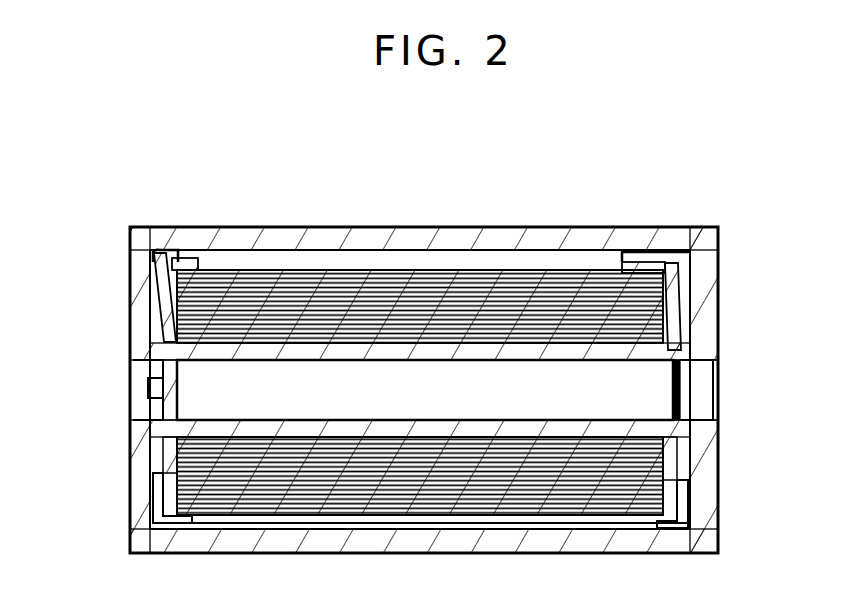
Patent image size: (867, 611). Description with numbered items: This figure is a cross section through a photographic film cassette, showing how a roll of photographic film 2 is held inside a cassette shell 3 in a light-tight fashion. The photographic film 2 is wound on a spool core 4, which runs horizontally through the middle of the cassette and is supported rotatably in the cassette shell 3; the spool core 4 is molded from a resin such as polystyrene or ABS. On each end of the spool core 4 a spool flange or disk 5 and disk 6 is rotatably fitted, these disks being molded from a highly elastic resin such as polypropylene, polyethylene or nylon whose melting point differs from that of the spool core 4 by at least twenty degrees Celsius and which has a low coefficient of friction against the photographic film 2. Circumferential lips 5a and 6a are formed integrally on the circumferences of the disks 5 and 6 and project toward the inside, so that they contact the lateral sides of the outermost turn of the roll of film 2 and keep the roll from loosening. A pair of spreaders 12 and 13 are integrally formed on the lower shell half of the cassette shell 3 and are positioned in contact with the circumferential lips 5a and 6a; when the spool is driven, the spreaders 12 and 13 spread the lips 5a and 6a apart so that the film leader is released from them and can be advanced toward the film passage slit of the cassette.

The photographic film 2 is at (428, 505).
The cassette shell 3 is at (421, 228).
The spool core 4 is at (674, 396).
The spool flange or disk 5 is at (150, 318).
The circumferential lip 5a is at (160, 250).
The spool flange or disk 6 is at (677, 320).
The circumferential lip 6a is at (684, 250).
The spreader 12 is at (186, 258).
The spreader 13 is at (633, 262).